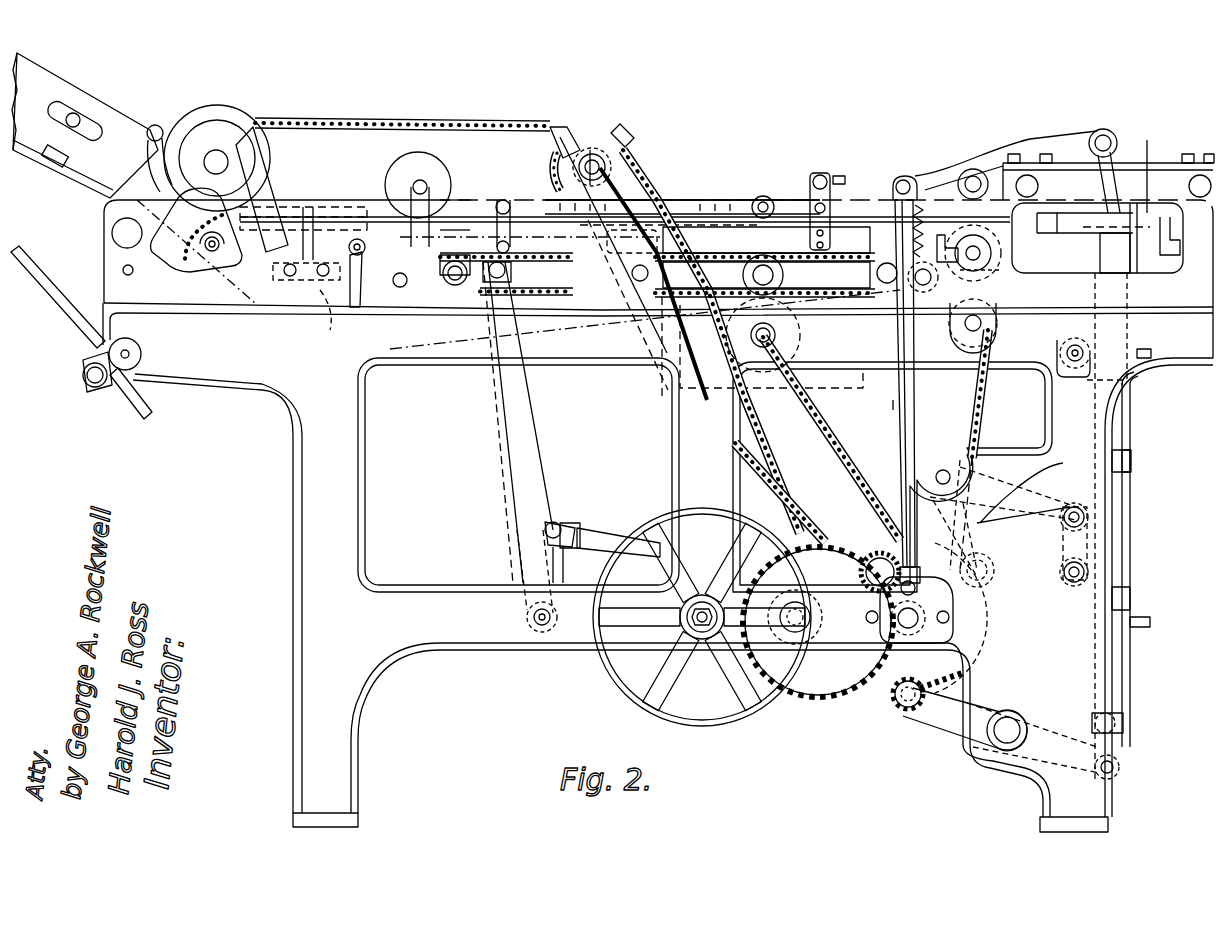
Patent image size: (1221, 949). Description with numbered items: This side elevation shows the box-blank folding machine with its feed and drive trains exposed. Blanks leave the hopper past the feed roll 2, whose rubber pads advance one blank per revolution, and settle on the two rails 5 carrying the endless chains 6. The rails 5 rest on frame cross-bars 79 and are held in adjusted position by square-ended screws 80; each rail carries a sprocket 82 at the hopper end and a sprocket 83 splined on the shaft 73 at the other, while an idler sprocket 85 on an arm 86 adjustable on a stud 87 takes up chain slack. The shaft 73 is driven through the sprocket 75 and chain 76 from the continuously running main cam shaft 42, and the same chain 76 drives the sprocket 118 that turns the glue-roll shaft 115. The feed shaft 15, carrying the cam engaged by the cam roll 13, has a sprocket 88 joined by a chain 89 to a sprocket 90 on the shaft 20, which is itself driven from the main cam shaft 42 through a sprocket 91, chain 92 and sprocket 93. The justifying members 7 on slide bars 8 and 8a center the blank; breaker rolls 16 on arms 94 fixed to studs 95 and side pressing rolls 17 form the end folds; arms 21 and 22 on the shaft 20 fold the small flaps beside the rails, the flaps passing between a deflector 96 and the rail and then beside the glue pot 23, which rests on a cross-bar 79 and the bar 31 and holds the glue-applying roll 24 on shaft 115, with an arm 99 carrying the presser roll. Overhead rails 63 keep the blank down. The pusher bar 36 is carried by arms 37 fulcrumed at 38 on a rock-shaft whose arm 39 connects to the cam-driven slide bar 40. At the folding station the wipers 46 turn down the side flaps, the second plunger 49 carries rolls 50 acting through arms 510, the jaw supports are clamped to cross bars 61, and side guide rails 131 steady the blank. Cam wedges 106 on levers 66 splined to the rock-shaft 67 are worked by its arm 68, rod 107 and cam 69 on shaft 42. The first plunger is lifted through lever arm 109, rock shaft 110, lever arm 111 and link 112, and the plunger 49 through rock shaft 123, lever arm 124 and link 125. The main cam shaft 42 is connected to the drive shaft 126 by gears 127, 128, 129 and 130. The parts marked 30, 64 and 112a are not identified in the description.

The feed roll 2 is at (278, 172).
The rails 5 is at (324, 233).
The endless chains 6 is at (265, 315).
The blank-positioning members 7 is at (315, 207).
The slide bar 8 is at (306, 282).
The slide bar 8a is at (316, 284).
The cam roll 13 is at (158, 126).
The feed shaft 15 is at (304, 217).
The breaker rolls 16 is at (450, 173).
The side pressing rolls 17 is at (450, 227).
The shaft 20 is at (600, 163).
The arms 21 is at (562, 128).
The arms 22 is at (627, 127).
The glue pot 23 is at (741, 261).
The glue-applying roll 24 is at (723, 237).
The bracket 30 is at (452, 282).
The bar 31 is at (631, 273).
The bar 36 is at (510, 272).
The arms 37 is at (522, 425).
The fulcrum 38 is at (533, 617).
The arm 39 is at (545, 550).
The slide bar 40 is at (602, 540).
The main cam shaft 42 is at (926, 618).
The folders 46 is at (1112, 137).
The second plunger 49 is at (1131, 420).
The rolls 50 is at (1131, 478).
The arms 510 is at (1123, 545).
The cross bars 61 is at (1036, 187).
The rails 63 is at (690, 210).
The stop 64 is at (1182, 243).
The levers 66 is at (1037, 140).
The rock-shaft 67 is at (973, 169).
The arm 68 is at (916, 185).
The cam 69 is at (914, 403).
The shaft 73 is at (983, 253).
The sprocket 75 is at (993, 325).
The chain 76 is at (800, 480).
The cross-bars 79 is at (393, 280).
The screws 80 is at (933, 280).
The sprocket 82 is at (212, 258).
The sprocket 83 is at (993, 270).
The idler sprocket 85 is at (320, 325).
The arm 86 is at (340, 305).
The stud 87 is at (357, 238).
The sprocket 88 is at (272, 147).
The chain 89 is at (405, 119).
The sprocket 90 is at (594, 148).
The sprocket 91 is at (880, 556).
The chain 92 is at (845, 458).
The sprocket 93 is at (553, 163).
The arm 94 is at (418, 199).
The stud 95 is at (446, 278).
The deflector 96 is at (497, 220).
The arm 99 is at (797, 197).
The cam wedges 106 is at (1113, 170).
The rod 107 is at (896, 405).
The lever arm 109 is at (1005, 521).
The rock shaft 110 is at (943, 469).
The lever arm 111 is at (1026, 521).
The link 112 is at (1060, 570).
The toothed sector 112a is at (950, 720).
The shaft 115 is at (755, 292).
The sprocket 118 is at (802, 337).
The rock shaft 123 is at (994, 732).
The lever arm 124 is at (1094, 725).
The link 125 is at (1120, 762).
The drive shaft 126 is at (702, 640).
The gear 127 is at (896, 705).
The gear 128 is at (807, 637).
The gear 129 is at (838, 699).
The gear 130 is at (682, 628).
The side guide rails 131 is at (1064, 240).